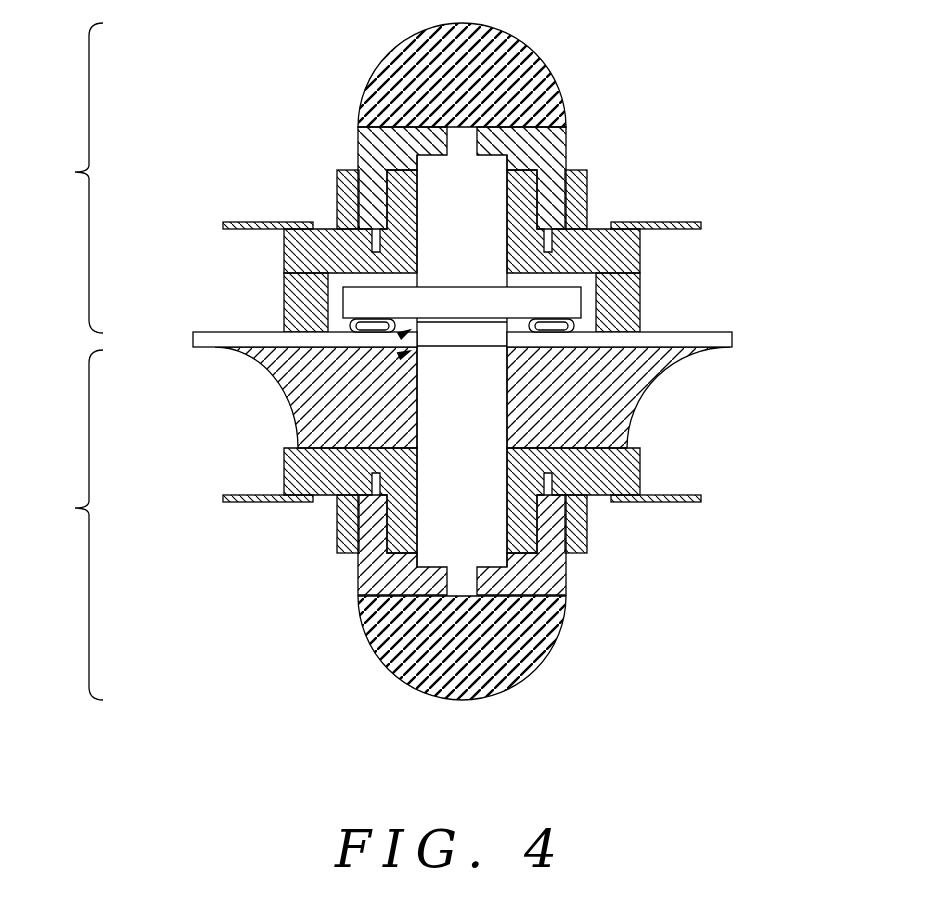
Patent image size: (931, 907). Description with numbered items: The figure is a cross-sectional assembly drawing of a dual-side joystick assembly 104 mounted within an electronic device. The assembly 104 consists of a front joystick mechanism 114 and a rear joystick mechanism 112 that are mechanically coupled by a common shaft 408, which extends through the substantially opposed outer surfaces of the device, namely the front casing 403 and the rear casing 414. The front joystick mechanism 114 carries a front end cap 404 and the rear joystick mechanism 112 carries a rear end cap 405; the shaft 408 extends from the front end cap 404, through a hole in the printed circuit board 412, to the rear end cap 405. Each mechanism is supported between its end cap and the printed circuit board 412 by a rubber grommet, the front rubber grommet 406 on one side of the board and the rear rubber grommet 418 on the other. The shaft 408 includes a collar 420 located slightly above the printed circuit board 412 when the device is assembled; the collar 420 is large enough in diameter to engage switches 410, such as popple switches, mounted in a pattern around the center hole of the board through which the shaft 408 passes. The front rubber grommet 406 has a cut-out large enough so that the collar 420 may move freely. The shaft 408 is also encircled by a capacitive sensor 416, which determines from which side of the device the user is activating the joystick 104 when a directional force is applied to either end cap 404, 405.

The dual-side joystick assembly 104 is at (748, 788).
The rear joystick mechanism 112 is at (65, 525).
The front joystick mechanism 114 is at (65, 178).
The front casing 403 is at (683, 222).
The front end cap 404 is at (557, 140).
The rear end cap 405 is at (560, 573).
The front rubber grommet 406 is at (635, 295).
The shaft 408 is at (430, 170).
The switches 410 is at (347, 323).
The printed circuit board 412 is at (727, 342).
The rear casing 414 is at (243, 505).
The capacitive sensor 416 is at (402, 334).
The rear rubber grommet 418 is at (633, 383).
The collar 420 is at (352, 293).